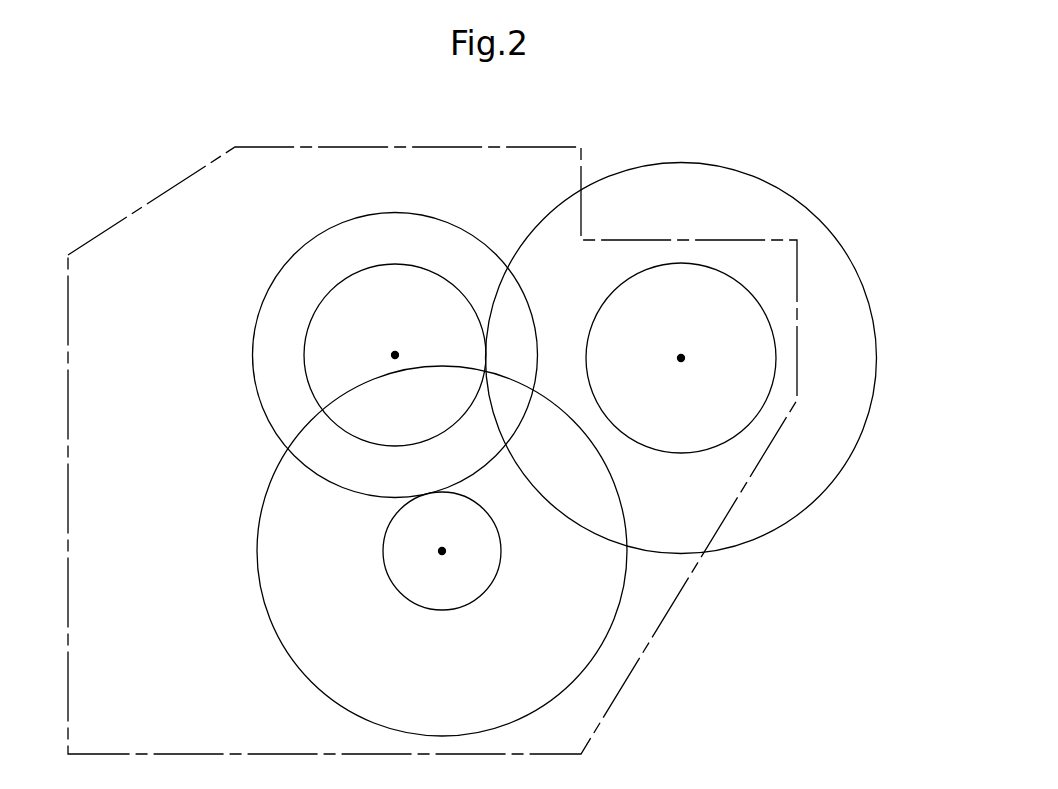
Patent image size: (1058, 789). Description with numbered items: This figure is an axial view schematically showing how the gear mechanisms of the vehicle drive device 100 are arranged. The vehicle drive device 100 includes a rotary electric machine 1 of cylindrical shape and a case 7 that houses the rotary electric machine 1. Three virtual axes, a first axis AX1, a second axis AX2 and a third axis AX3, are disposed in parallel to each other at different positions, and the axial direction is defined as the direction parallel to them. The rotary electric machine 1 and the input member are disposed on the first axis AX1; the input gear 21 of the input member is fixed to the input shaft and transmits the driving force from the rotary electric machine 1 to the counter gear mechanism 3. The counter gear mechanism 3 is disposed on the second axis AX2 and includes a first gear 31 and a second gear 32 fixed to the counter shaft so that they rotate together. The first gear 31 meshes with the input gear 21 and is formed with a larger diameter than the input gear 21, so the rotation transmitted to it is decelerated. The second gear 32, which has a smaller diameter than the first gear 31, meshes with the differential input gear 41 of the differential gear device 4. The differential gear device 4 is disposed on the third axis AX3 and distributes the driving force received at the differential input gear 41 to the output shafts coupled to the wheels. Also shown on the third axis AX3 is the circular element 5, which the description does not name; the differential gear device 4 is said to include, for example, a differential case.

The vehicle drive device 100 is at (827, 128).
The case 7 is at (388, 147).
The counter gear mechanism 3 is at (235, 310).
The first gear 31 is at (282, 276).
The second gear 32 is at (392, 262).
The second axis AX2 is at (394, 350).
The rotary electric machine 1 is at (270, 634).
The input gear 21 is at (497, 578).
The first axis AX1 is at (440, 551).
The differential gear device 4 is at (705, 358).
The differential input gear 41 is at (836, 234).
The differential case 5 is at (778, 356).
The third axis AX3 is at (681, 352).